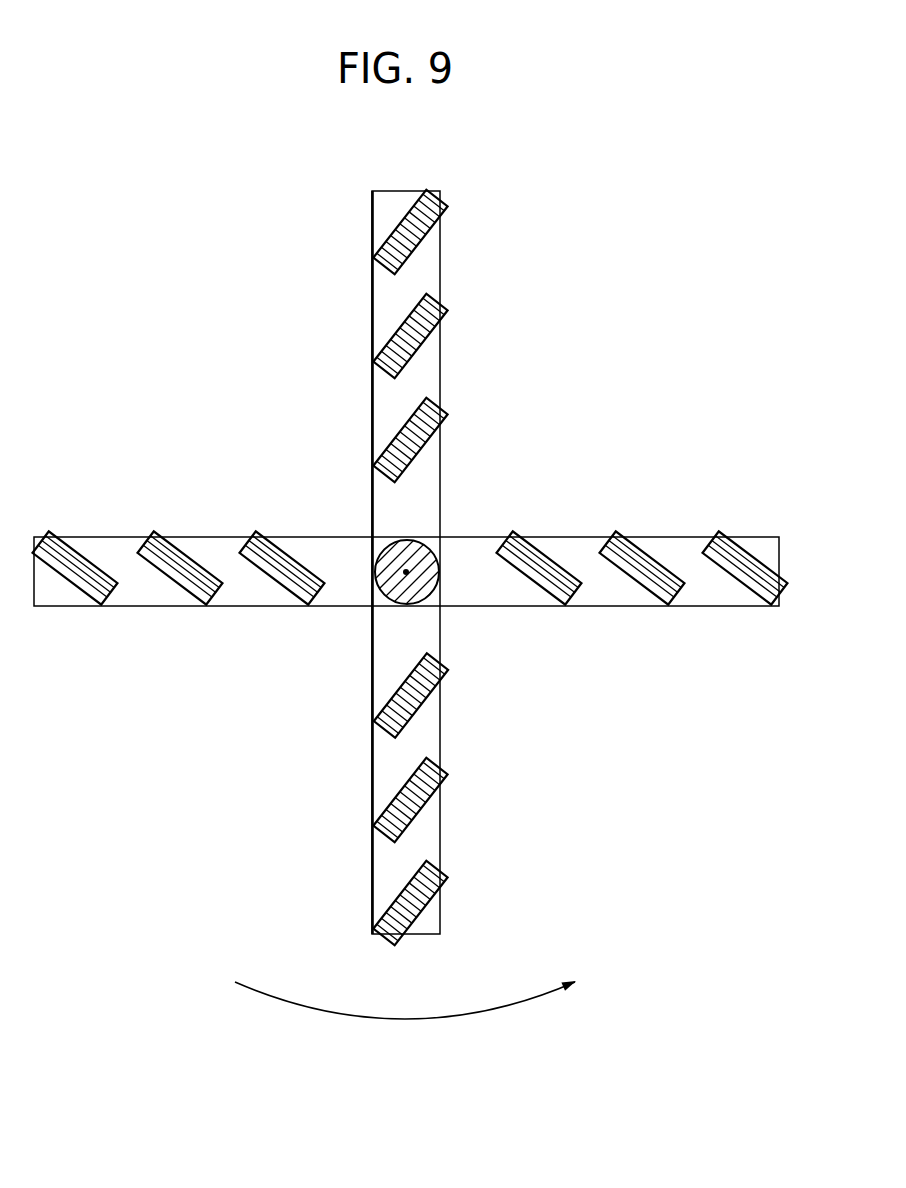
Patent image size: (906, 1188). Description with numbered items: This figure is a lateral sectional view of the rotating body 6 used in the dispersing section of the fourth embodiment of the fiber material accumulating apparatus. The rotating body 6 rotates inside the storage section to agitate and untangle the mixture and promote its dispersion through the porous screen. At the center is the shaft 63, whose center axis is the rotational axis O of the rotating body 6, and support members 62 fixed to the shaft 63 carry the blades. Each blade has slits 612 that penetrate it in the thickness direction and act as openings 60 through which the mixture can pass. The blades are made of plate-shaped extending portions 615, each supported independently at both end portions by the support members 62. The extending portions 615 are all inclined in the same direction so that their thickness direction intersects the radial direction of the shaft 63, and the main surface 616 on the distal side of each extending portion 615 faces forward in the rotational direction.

The rotating body 6 is at (740, 255).
The openings 60 is at (210, 557).
The slits 612 is at (110, 553).
The support members 62 is at (767, 548).
The shaft 63 is at (422, 585).
The extending portions 615 is at (393, 897).
The main surface 616 is at (430, 917).
The rotational axis O is at (406, 572).